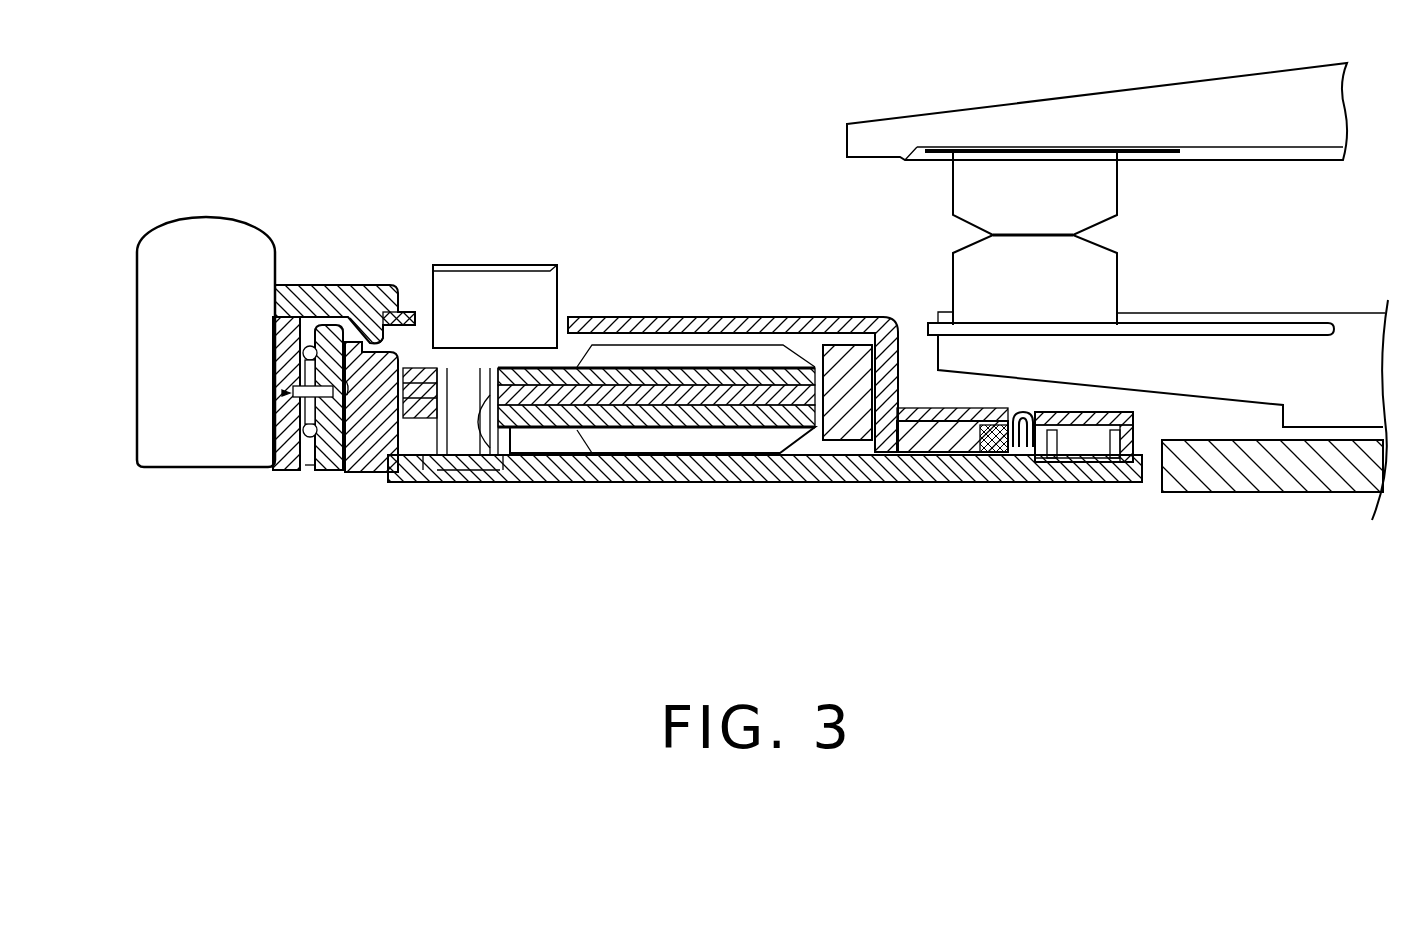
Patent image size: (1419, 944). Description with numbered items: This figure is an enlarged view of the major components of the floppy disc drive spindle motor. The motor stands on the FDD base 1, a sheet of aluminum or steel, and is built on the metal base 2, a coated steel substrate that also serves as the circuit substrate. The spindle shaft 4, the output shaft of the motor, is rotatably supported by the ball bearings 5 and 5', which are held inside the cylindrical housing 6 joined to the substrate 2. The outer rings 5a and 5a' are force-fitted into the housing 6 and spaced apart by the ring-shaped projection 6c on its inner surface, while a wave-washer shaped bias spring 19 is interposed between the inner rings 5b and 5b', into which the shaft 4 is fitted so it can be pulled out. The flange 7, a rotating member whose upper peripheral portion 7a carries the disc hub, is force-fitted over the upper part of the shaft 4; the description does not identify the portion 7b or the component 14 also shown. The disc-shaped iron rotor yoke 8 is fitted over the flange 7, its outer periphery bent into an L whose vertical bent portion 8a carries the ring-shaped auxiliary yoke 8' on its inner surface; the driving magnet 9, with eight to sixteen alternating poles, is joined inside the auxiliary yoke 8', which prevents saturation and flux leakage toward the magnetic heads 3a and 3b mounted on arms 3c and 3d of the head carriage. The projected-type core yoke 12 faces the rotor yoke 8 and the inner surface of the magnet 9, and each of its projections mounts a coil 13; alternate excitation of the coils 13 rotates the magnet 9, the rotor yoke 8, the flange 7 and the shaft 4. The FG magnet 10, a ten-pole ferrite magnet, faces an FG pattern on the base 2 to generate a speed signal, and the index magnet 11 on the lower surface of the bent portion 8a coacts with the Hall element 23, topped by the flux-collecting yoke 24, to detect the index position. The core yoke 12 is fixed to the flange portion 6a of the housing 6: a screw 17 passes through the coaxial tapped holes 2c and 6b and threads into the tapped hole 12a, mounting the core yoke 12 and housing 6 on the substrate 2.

The FDD base 1 is at (1268, 492).
The metal base 2 is at (813, 481).
The tapped hole 2c is at (433, 473).
The magnetic head 3a is at (1115, 208).
The magnetic head 3b is at (1117, 272).
The arm 3c is at (1263, 147).
The arm 3d is at (1285, 355).
The spindle shaft 4 is at (205, 238).
The ball bearing 5 is at (308, 323).
The outer ring 5a is at (348, 322).
The inner ring 5b is at (293, 322).
The ball bearing 5' is at (301, 523).
The outer ring 5a' is at (341, 501).
The inner ring 5b' is at (276, 501).
The cylindrical housing 6 is at (367, 473).
The flange portion 6a is at (397, 473).
The tapped hole 6b is at (438, 473).
The ring-shaped projection 6c is at (345, 385).
The flange 7 is at (398, 310).
The upper peripheral portion 7a is at (376, 283).
The cap lug 7b is at (382, 338).
The rotor yoke 8 is at (733, 349).
The auxiliary yoke 8' is at (883, 348).
The vertical bent portion 8a is at (898, 393).
The driving magnet 9 is at (832, 350).
The FG magnet 10 is at (920, 453).
The index magnet 11 is at (1000, 453).
The core yoke 12 is at (625, 392).
The tapped hole 12a is at (493, 473).
The coil 13 is at (745, 455).
The block 14 is at (533, 287).
The screw 17 is at (480, 473).
The bias spring 19 is at (278, 463).
The Hall element 23 is at (1093, 482).
The yoke 24 is at (1122, 412).